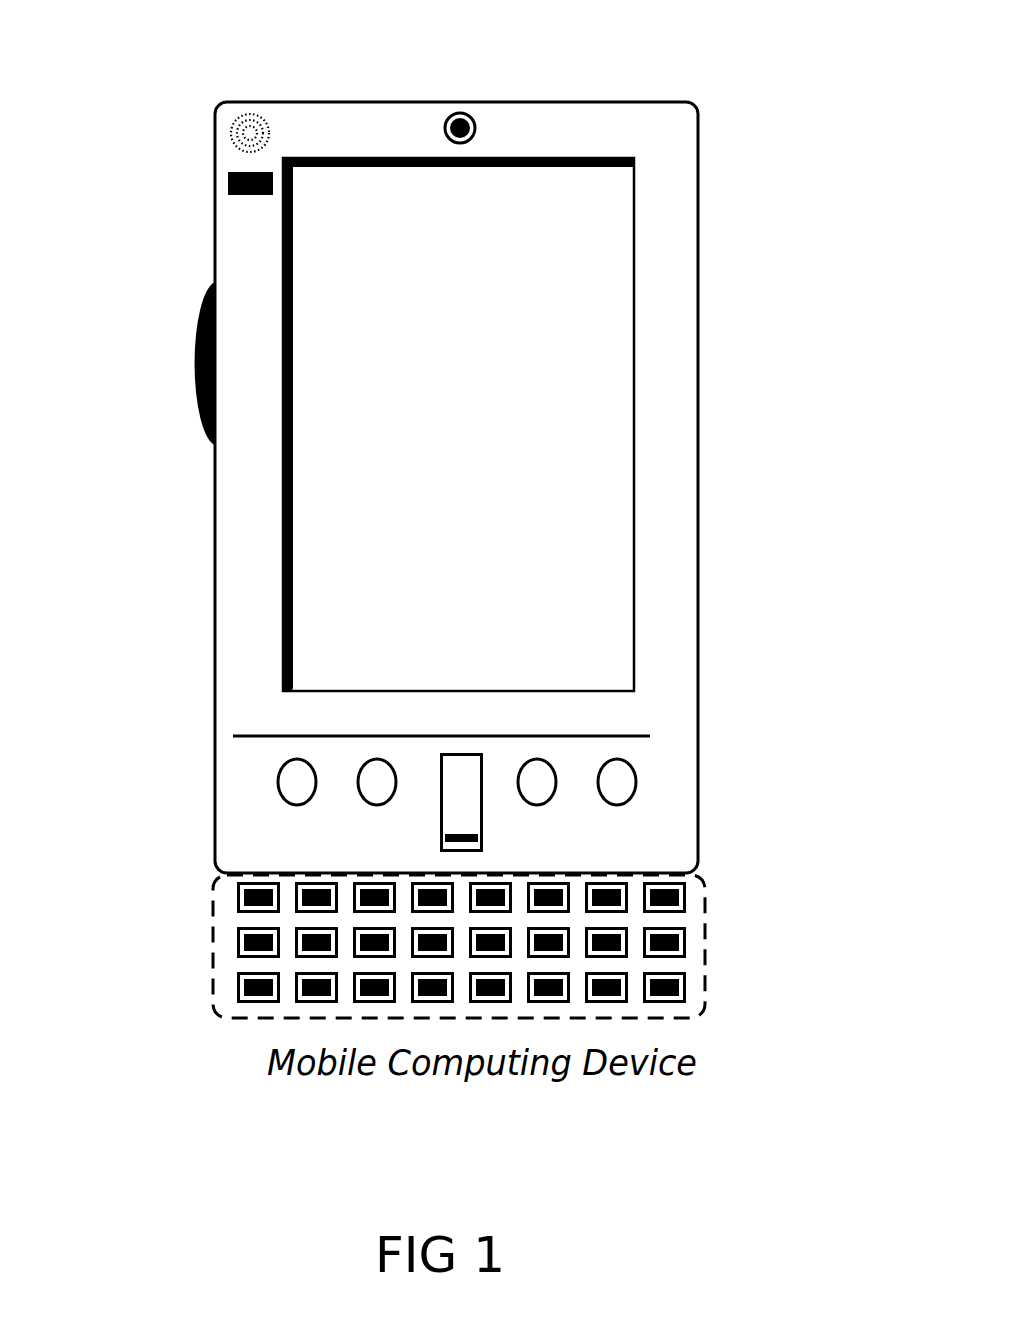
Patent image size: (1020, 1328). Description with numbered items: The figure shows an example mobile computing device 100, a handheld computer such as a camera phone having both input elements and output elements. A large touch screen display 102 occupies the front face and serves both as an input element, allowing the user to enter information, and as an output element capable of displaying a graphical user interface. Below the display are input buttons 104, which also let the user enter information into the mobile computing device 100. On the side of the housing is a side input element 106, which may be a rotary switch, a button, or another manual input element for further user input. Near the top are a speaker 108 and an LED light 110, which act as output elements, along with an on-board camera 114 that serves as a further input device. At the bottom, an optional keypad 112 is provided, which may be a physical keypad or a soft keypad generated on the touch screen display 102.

The mobile computing device 100 is at (517, 472).
The touch screen display 102 is at (318, 614).
The input buttons 104 is at (615, 798).
The side input element 106 is at (193, 332).
The speaker 108 is at (230, 128).
The LED light 110 is at (228, 183).
The keypad 112 is at (212, 980).
The on-board camera 114 is at (472, 117).